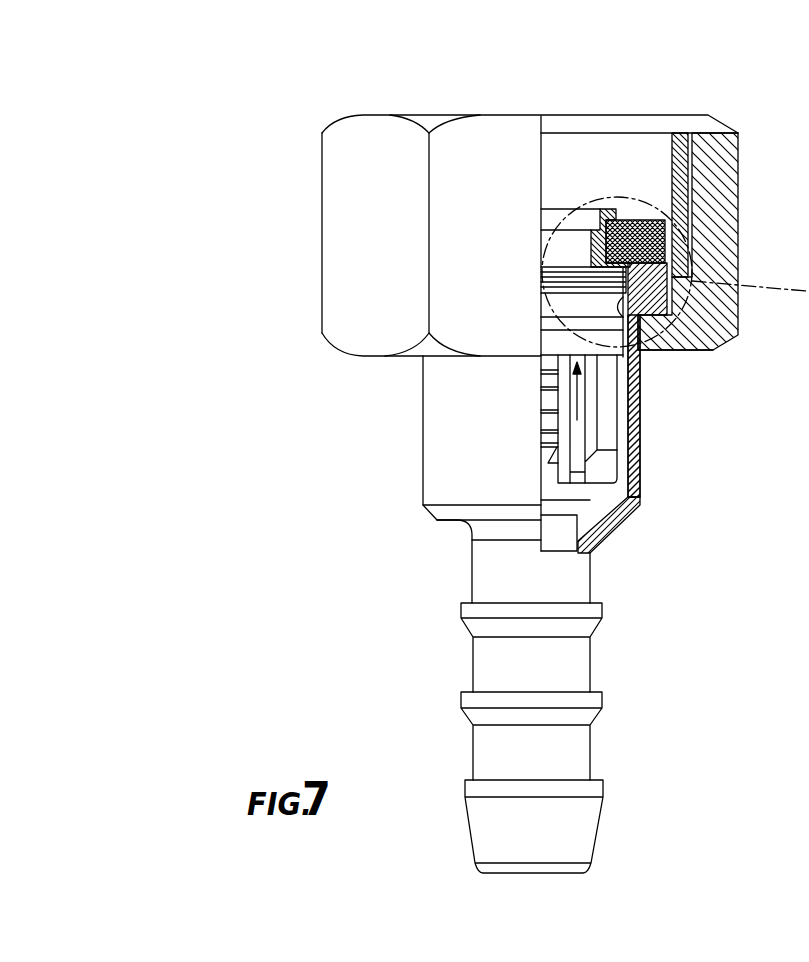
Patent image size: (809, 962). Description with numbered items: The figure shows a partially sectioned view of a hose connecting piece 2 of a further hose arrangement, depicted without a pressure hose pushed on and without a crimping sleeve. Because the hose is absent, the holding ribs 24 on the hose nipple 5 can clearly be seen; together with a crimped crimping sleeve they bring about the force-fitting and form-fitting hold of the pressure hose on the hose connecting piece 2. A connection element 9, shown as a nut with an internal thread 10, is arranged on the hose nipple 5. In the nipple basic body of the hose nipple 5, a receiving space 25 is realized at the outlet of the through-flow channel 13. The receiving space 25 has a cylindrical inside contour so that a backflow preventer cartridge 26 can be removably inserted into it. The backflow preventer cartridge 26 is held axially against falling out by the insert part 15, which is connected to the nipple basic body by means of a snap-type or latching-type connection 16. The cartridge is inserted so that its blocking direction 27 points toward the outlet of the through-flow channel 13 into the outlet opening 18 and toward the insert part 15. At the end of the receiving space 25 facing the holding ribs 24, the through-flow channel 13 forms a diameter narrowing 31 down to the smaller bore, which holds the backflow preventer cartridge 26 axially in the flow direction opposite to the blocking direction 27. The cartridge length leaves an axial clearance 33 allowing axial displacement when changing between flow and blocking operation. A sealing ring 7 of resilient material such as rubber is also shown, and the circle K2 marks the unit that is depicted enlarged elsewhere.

The hose connecting piece 2 is at (245, 487).
The hose nipple 5 is at (432, 495).
The sealing ring 7 is at (638, 219).
The connection element 9 is at (723, 170).
The internal thread 10 is at (682, 160).
The through-flow channel 13 is at (562, 529).
The insert part 15 is at (593, 250).
The snap-type or latching-type connection 16 is at (665, 302).
The outlet opening 18 is at (548, 205).
The holding ribs 24 is at (568, 612).
The receiving space 25 is at (617, 490).
The backflow preventer cartridge 26 is at (562, 465).
The blocking direction 27 is at (570, 402).
The diameter narrowing 31 is at (598, 496).
The axial clearance 33 is at (562, 493).
The circle K2 is at (645, 281).